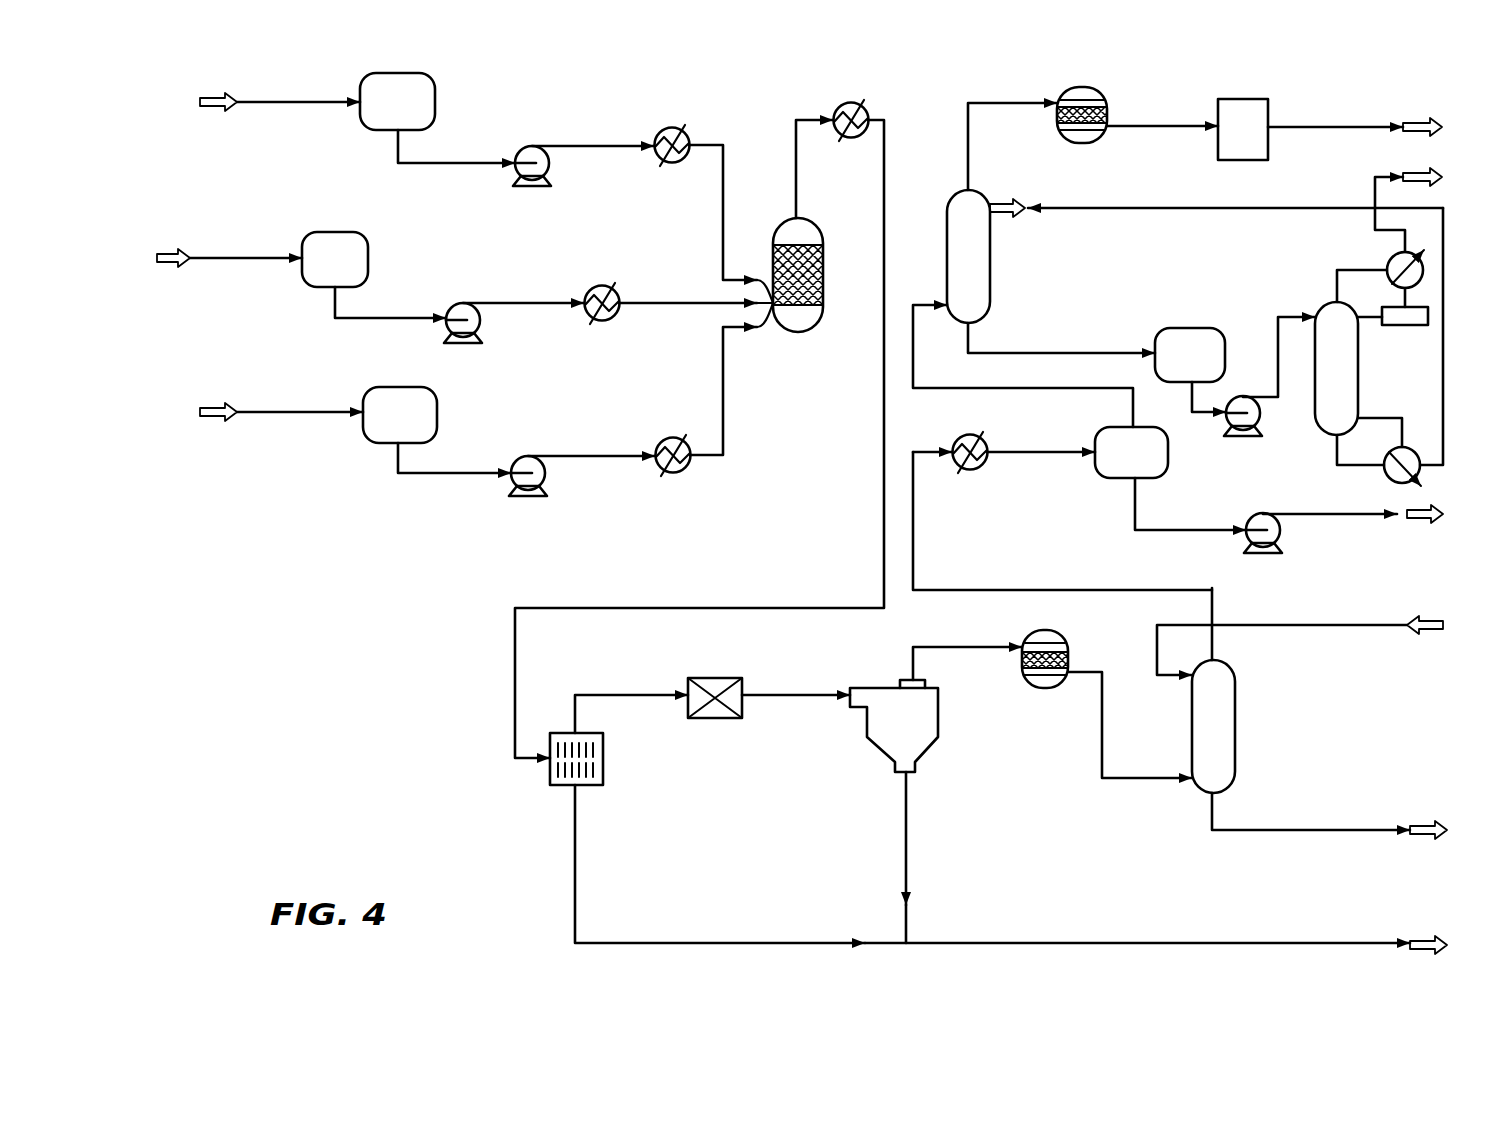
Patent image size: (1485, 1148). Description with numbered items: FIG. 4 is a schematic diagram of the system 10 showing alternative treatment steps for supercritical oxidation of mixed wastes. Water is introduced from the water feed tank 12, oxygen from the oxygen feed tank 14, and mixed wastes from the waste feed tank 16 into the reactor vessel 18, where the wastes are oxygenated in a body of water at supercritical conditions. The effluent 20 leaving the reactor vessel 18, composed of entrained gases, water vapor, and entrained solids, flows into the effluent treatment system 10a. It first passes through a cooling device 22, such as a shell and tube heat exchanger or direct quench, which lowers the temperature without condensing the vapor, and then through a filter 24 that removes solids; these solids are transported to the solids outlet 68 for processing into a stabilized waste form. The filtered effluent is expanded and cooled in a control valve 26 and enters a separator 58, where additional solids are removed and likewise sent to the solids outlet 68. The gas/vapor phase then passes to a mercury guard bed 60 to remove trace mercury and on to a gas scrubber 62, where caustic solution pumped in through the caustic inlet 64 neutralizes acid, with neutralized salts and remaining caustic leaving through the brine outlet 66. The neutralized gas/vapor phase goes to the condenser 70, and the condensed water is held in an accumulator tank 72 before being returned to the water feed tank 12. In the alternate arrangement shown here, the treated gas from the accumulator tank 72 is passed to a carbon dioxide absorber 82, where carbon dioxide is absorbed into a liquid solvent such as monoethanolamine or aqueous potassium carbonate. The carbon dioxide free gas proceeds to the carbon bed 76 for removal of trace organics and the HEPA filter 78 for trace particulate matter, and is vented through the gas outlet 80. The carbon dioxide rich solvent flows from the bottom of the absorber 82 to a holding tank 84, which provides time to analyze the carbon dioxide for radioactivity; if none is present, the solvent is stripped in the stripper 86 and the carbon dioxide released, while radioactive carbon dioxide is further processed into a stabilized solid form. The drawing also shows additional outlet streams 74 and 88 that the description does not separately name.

The system 10 is at (362, 515).
The effluent treatment system 10a is at (943, 173).
The water feed tank 12 is at (430, 407).
The oxygen feed tank 14 is at (362, 260).
The waste feed tank 16 is at (428, 100).
The reactor vessel 18 is at (795, 327).
The effluent 20 is at (796, 140).
The cooling device 22 is at (845, 106).
The filter 24 is at (562, 785).
The control valve 26 is at (726, 712).
The separator 58 is at (887, 743).
The mercury guard bed 60 is at (1038, 680).
The gas scrubber 62 is at (1228, 737).
The caustic inlet 64 is at (1425, 635).
The brine outlet 66 is at (1422, 825).
The solids outlet 68 is at (1422, 940).
The condenser 70 is at (972, 470).
The accumulator tank 72 is at (1162, 462).
The outlet stream 74 is at (1415, 527).
The carbon bed 76 is at (1090, 90).
The HEPA filter 78 is at (1255, 103).
The gas outlet 80 is at (1412, 122).
The carbon dioxide absorber 82 is at (983, 270).
The holding tank 84 is at (1190, 327).
The stripper 86 is at (1357, 383).
The outlet stream 88 is at (1415, 172).